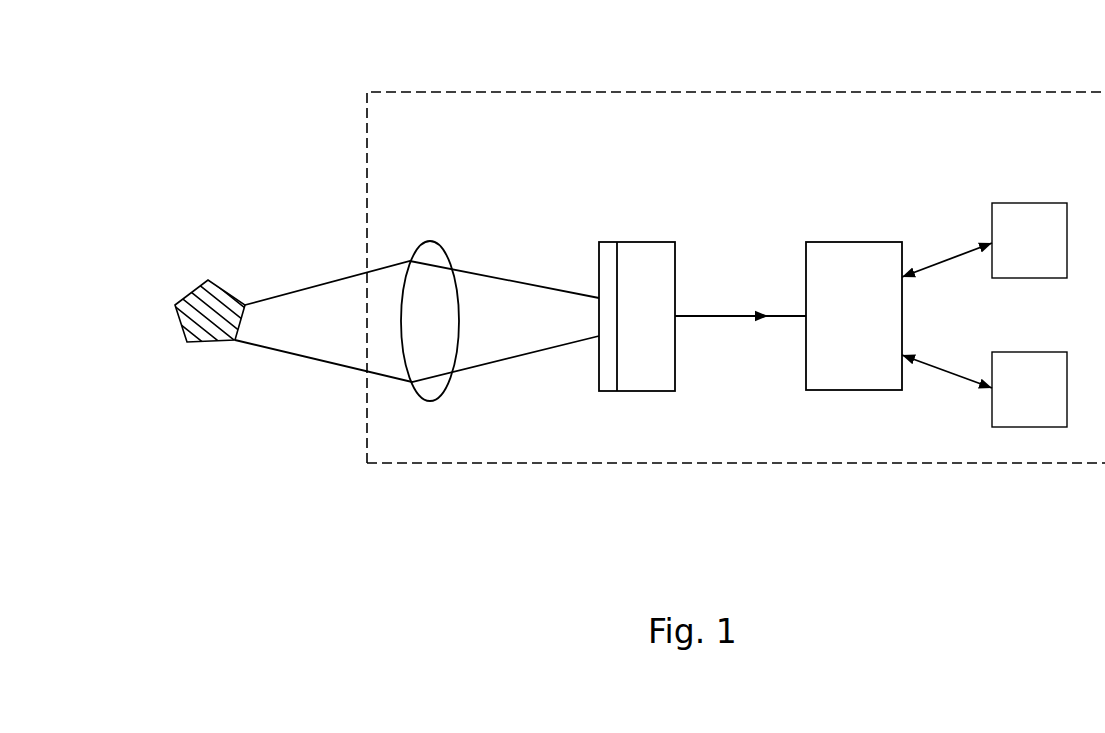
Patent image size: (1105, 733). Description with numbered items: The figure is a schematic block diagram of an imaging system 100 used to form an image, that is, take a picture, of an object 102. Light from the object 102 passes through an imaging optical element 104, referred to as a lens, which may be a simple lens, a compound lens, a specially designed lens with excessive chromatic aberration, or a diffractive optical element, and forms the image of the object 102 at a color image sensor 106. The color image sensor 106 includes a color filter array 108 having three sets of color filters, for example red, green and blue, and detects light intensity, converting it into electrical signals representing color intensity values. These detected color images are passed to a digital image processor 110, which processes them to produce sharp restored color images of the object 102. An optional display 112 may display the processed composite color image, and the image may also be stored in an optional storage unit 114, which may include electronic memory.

The imaging system 100 is at (447, 91).
The object 102 is at (190, 291).
The imaging optical element 104 is at (412, 245).
The color image sensor 106 is at (637, 242).
The color filter array 108 is at (595, 250).
The digital image processor 110 is at (847, 242).
The display 112 is at (1048, 203).
The storage unit 114 is at (1052, 352).